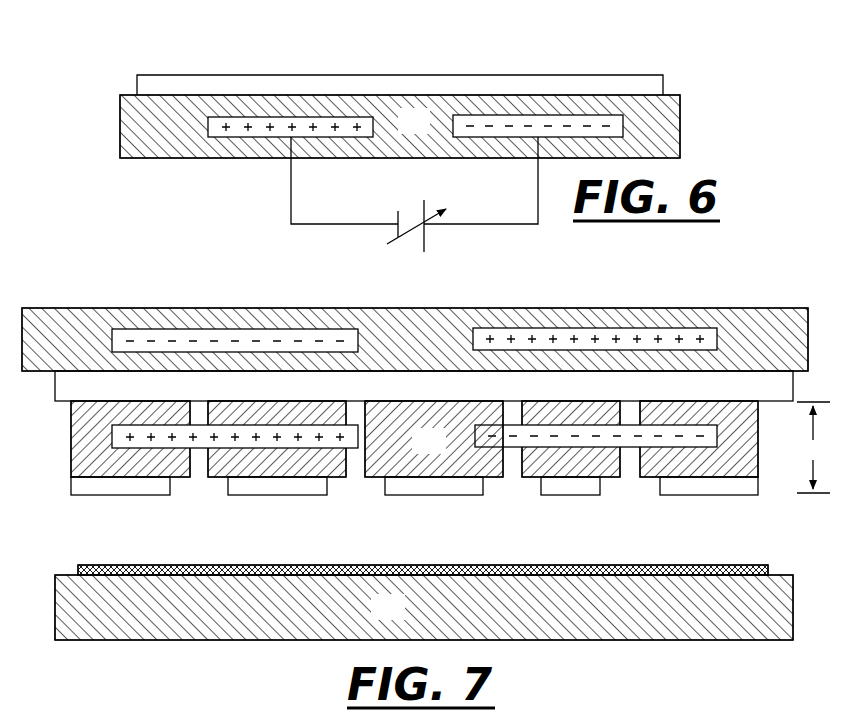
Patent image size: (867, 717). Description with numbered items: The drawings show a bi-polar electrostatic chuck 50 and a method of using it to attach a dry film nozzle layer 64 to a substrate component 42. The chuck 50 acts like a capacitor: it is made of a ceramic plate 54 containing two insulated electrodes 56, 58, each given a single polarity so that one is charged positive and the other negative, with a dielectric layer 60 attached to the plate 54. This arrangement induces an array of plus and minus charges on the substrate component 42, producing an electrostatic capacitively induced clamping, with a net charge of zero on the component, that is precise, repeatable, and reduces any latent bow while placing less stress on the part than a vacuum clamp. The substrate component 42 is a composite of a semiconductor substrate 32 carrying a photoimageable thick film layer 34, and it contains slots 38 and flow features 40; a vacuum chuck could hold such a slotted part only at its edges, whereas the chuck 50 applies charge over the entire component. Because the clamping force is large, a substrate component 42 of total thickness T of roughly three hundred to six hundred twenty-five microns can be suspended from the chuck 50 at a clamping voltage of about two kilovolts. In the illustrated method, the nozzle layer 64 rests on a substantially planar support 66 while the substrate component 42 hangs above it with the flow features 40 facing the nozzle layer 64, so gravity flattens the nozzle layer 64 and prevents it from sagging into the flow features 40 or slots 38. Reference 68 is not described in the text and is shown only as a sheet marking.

In FIG. 6, the bi-polar electrostatic chuck 50 is at (682, 90).
In FIG. 7, the bi-polar electrostatic chuck 50 is at (779, 302).
In FIG. 6, the ceramic plate 54 is at (428, 132).
In FIG. 6, the insulated electrode 56 is at (523, 126).
In FIG. 6, the insulated electrode 58 is at (294, 126).
In FIG. 6, the dielectric layer 60 is at (610, 82).
In FIG. 7, the dielectric layer 60 is at (447, 399).
In FIG. 7, the substrate component 42 is at (65, 403).
In FIG. 7, the substrate 32 is at (442, 453).
In FIG. 7, the thick film layer 34 is at (712, 484).
In FIG. 7, the slot 38 is at (630, 482).
In FIG. 7, the flow feature 40 is at (509, 491).
In FIG. 7, the nozzle layer 64 is at (355, 565).
In FIG. 7, the substantially planar support 66 is at (401, 617).
In FIG. 7, the sheet reference 68 is at (754, 706).
In FIG. 7, the total thickness T is at (813, 447).